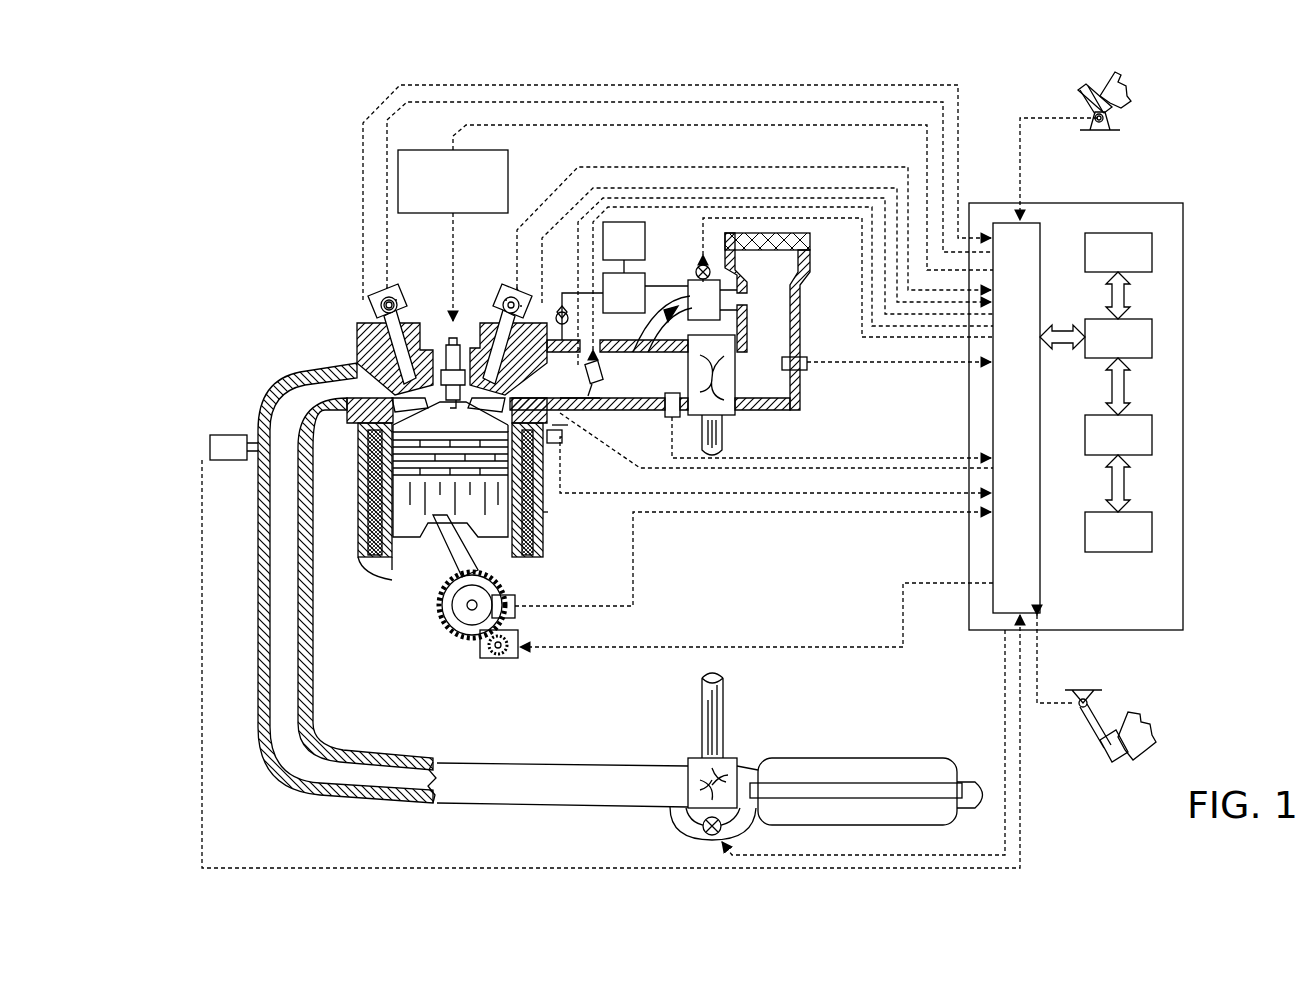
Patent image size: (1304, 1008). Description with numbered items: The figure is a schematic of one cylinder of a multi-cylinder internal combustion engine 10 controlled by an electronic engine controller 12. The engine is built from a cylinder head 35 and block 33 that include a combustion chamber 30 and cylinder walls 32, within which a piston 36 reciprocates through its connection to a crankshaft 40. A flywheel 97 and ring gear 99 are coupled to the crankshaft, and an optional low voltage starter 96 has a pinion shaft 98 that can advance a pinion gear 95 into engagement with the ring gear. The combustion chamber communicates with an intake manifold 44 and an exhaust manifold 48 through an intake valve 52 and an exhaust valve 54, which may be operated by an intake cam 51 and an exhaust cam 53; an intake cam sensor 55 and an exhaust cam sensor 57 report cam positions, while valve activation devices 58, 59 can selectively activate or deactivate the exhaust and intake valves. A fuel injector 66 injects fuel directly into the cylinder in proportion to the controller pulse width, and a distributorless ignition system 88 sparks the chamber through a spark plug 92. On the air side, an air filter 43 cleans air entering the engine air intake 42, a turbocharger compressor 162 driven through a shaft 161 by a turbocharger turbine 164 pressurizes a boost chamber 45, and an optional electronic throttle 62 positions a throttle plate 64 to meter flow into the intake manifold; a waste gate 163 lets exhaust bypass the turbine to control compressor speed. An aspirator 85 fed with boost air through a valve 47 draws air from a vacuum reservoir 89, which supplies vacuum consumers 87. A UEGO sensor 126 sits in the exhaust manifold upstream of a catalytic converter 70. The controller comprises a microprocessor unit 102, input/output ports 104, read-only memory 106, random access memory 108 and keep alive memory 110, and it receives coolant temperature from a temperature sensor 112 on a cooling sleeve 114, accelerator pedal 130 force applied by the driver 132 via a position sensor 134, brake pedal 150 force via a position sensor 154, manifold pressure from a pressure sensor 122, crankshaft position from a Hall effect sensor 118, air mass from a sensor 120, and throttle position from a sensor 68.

The internal combustion engine 10 is at (296, 281).
The electronic engine controller 12 is at (1172, 203).
The combustion chamber 30 is at (450, 414).
The cylinder walls 32 is at (402, 552).
The block 33 is at (355, 458).
The cylinder head 35 is at (352, 320).
The piston 36 is at (437, 516).
The crankshaft 40 is at (460, 627).
The engine air intake 42 is at (697, 241).
The air filter 43 is at (792, 248).
The intake manifold 44 is at (650, 375).
The boost chamber 45 is at (700, 370).
The valve 47 is at (696, 270).
The exhaust manifold 48 is at (473, 585).
The intake cam 51 is at (506, 297).
The intake valve 52 is at (488, 384).
The exhaust cam 53 is at (398, 300).
The exhaust valve 54 is at (400, 385).
The intake cam sensor 55 is at (527, 306).
The exhaust cam sensor 57 is at (378, 302).
The valve activation device 58 is at (400, 305).
The valve activation device 59 is at (504, 306).
The electronic throttle 62 is at (599, 370).
The throttle plate 64 is at (598, 387).
The fuel injector 66 is at (557, 428).
The throttle position sensor 68 is at (575, 404).
The catalytic converter 70 is at (790, 758).
The aspirator 85 is at (685, 316).
The vacuum consumers 87 is at (624, 241).
The distributorless ignition system 88 is at (410, 150).
The vacuum reservoir 89 is at (600, 300).
The spark plug 92 is at (455, 335).
The pinion gear 95 is at (503, 660).
The starter 96 is at (496, 667).
The flywheel 97 is at (447, 603).
The pinion shaft 98 is at (494, 655).
The ring gear 99 is at (470, 640).
The microprocessor unit 102 is at (1152, 338).
The input/output ports 104 is at (1042, 235).
The read-only memory 106 is at (1152, 250).
The random access memory 108 is at (1152, 435).
The keep alive memory 110 is at (1152, 532).
The temperature sensor 112 is at (560, 445).
The cooling sleeve 114 is at (547, 516).
The Hall effect sensor 118 is at (515, 600).
The air mass sensor 120 is at (808, 362).
The pressure sensor 122 is at (670, 418).
The UEGO sensor 126 is at (208, 440).
The accelerator pedal 130 is at (1078, 97).
The driver 132 is at (1125, 88).
The position sensor 134 is at (1106, 118).
The brake pedal 150 is at (1083, 717).
The position sensor 154 is at (1073, 698).
The shaft 161 is at (722, 428).
The turbocharger compressor 162 is at (773, 407).
The waste gate 163 is at (704, 834).
The turbocharger turbine 164 is at (693, 760).